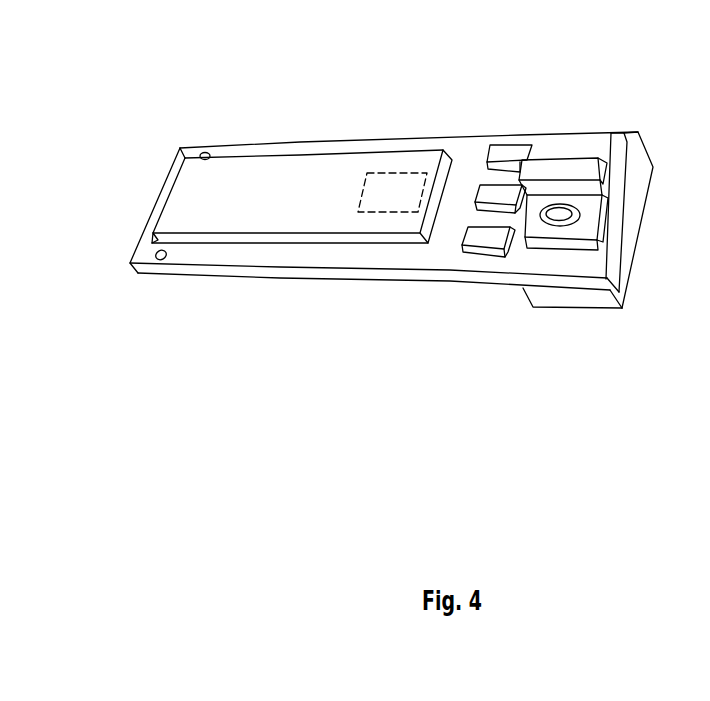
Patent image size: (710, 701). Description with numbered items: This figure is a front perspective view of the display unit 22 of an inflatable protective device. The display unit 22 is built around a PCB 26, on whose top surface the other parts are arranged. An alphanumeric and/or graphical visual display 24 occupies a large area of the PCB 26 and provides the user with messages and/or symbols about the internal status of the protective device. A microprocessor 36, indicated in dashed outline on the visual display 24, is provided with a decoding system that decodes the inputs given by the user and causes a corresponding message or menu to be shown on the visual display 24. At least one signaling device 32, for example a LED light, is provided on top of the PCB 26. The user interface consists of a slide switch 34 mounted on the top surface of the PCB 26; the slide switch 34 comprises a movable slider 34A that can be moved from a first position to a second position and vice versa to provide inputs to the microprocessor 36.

The display unit 22 is at (135, 176).
The visual display 24 is at (320, 187).
The PCB 26 is at (474, 159).
The signaling device 32 is at (480, 255).
The slide switch 34 is at (613, 148).
The movable slider 34A is at (570, 167).
The microprocessor 36 is at (388, 187).